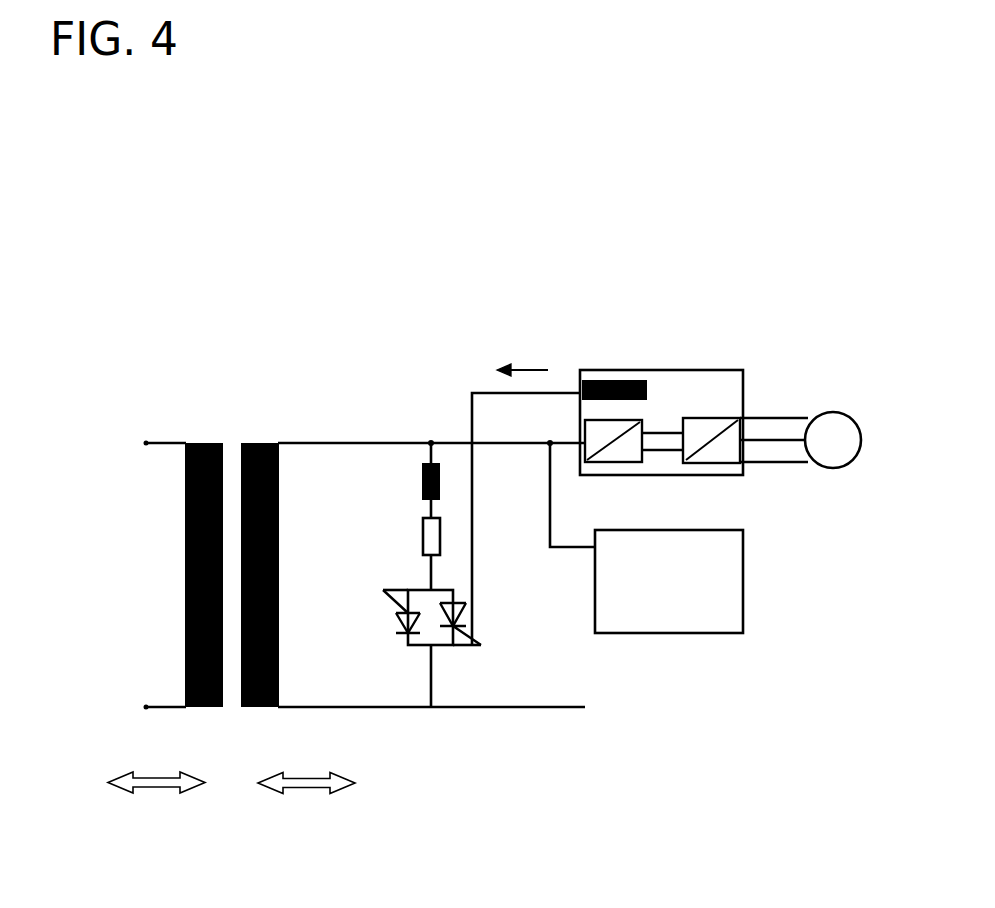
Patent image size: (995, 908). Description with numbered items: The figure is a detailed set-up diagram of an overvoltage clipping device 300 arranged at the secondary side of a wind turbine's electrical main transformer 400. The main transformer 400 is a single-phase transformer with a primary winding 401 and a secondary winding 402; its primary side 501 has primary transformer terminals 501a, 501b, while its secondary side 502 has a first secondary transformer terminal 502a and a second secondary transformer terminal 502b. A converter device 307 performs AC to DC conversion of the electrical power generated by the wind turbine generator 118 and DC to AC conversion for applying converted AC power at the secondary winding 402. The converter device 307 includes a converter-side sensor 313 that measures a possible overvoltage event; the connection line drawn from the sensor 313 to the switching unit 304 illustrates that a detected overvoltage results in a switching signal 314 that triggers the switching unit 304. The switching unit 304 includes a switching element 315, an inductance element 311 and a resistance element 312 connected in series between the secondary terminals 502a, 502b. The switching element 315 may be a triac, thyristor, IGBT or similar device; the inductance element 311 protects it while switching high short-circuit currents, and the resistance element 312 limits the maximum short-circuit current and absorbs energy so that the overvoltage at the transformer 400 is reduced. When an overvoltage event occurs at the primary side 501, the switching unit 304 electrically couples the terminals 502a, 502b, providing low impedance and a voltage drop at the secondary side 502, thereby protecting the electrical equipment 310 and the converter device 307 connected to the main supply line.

The overvoltage clipping device 300 is at (767, 216).
The switching unit 304 is at (448, 680).
The converter device 307 is at (688, 378).
The electrical equipment 310 is at (670, 622).
The inductance element 311 is at (422, 490).
The resistance element 312 is at (423, 535).
The converter-side sensor 313 is at (614, 382).
The switching signal 314 is at (548, 370).
The switching element 315 is at (458, 622).
The wind turbine generator 118 is at (830, 465).
The electrical main transformer 400 is at (237, 392).
The primary winding 401 is at (201, 452).
The secondary winding 402 is at (258, 452).
The primary side 501 is at (160, 782).
The secondary side 502 is at (308, 785).
The primary transformer terminal 501a is at (147, 443).
The primary transformer terminal 501b is at (147, 708).
The first secondary transformer terminal 502a is at (317, 443).
The second secondary transformer terminal 502b is at (322, 707).